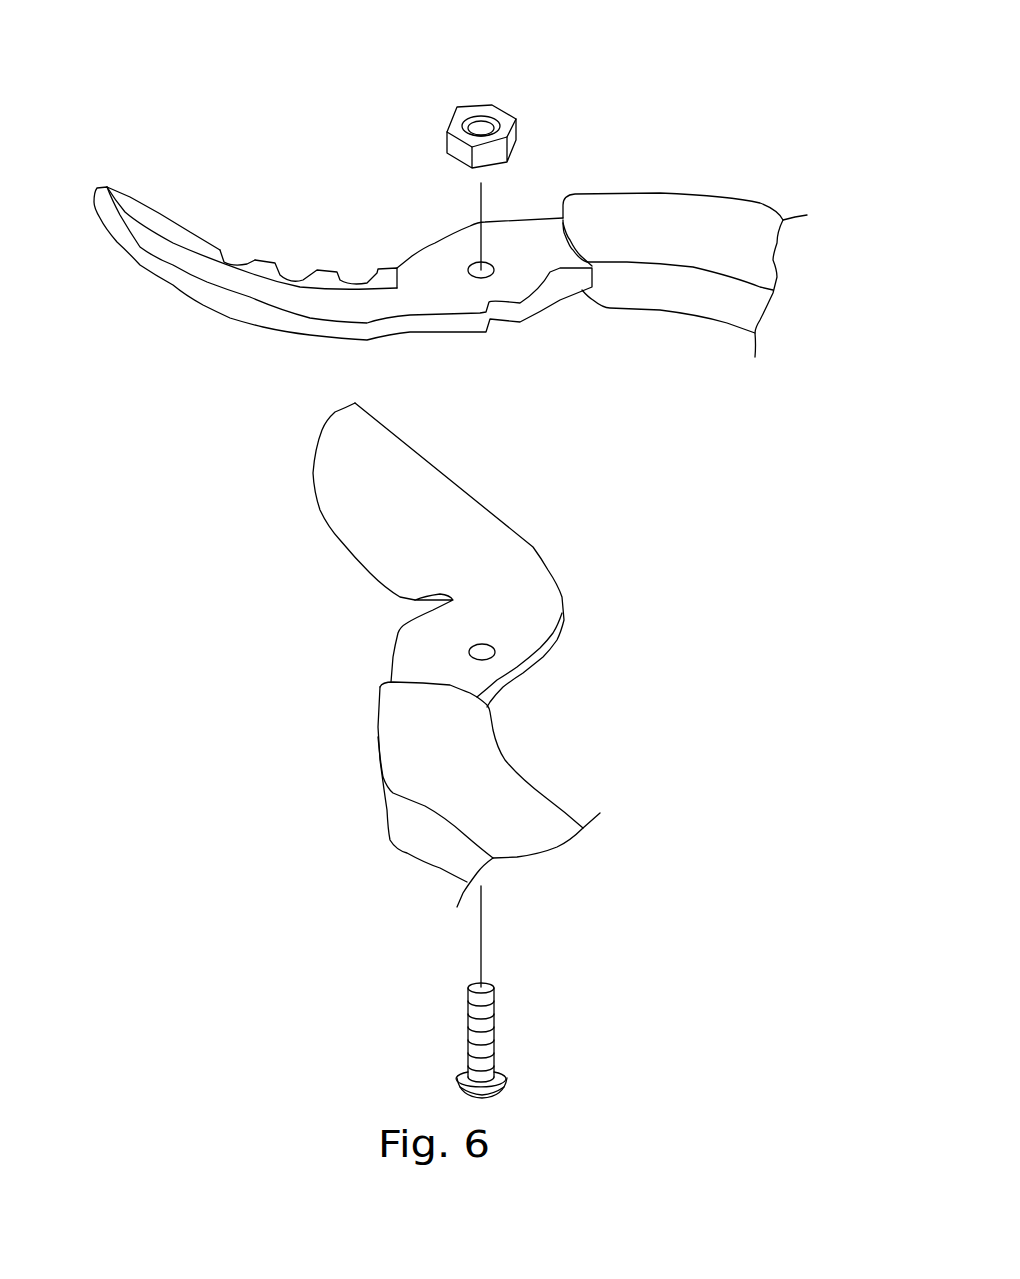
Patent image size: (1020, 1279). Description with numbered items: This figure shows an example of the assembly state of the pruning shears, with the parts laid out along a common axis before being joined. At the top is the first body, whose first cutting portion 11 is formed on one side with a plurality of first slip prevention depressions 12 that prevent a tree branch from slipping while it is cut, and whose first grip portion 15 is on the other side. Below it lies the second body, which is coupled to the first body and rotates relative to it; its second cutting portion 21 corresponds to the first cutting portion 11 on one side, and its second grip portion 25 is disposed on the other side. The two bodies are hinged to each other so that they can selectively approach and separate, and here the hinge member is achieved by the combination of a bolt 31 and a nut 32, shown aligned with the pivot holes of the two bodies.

The first cutting portion 11 is at (162, 277).
The first slip prevention depressions 12 is at (239, 254).
The first grip portion 15 is at (688, 215).
The second cutting portion 21 is at (347, 470).
The second grip portion 25 is at (493, 777).
The bolt 31 is at (485, 1030).
The nut 32 is at (473, 110).